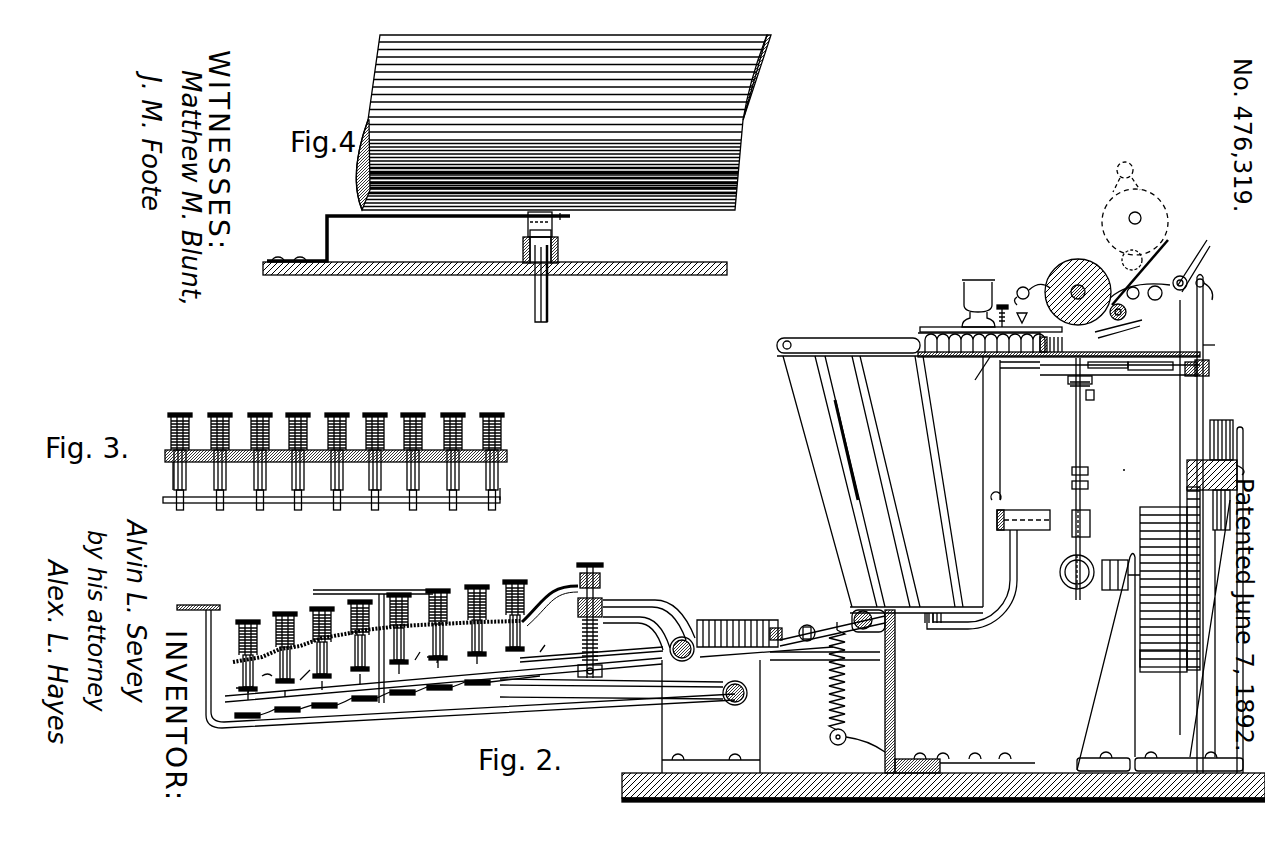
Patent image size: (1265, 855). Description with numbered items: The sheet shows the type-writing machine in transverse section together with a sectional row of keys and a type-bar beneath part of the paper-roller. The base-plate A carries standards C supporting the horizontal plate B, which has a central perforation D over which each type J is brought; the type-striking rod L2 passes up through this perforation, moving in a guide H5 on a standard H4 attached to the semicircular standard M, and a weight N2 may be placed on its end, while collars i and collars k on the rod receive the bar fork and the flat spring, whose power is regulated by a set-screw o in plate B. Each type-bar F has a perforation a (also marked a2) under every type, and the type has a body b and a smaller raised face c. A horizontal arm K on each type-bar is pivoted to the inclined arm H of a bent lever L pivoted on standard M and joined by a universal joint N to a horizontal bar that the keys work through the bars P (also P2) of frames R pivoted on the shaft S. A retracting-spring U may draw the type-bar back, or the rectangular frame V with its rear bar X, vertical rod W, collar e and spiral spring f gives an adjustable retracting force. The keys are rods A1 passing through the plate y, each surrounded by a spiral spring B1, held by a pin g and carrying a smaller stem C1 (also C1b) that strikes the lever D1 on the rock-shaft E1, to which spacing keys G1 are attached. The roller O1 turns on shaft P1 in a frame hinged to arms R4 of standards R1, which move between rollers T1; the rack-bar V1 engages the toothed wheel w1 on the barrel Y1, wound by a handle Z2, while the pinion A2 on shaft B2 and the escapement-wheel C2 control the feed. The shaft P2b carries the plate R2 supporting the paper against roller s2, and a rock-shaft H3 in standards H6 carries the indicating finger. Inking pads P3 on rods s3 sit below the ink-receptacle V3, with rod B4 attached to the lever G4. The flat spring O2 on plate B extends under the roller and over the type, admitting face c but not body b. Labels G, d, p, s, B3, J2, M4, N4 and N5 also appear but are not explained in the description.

In FIG. 2, the base-plate A is at (1046, 770).
In FIG. 4, the horizontal plate B is at (447, 266).
In FIG. 2, the standards C is at (1146, 611).
In FIG. 2, the perforation D is at (1074, 365).
In FIG. 4, the type-bars F is at (523, 248).
In FIG. 2, the type-bars F is at (920, 340).
In FIG. 2, the key guide bar G is at (382, 590).
In FIG. 2, the vertically-inclined arm H is at (888, 450).
In FIG. 4, the type J is at (560, 236).
In FIG. 2, the horizontal arm K is at (988, 337).
In FIG. 2, the bent levers L is at (832, 622).
In FIG. 2, the semicircular standard M is at (897, 688).
In FIG. 2, the universal joint N is at (803, 626).
In FIG. 3, the horizontal parallel bars P is at (279, 503).
In FIG. 2, the frame R is at (636, 633).
In FIG. 2, the shaft S is at (680, 657).
In FIG. 2, the retracting-spring U is at (857, 687).
In FIG. 2, the rectangular frame V is at (649, 609).
In FIG. 2, the vertical rod W is at (600, 594).
In FIG. 2, the rear bar X is at (765, 629).
In FIG. 4, the perforation a is at (558, 258).
In FIG. 4, the body of the type b is at (527, 224).
In FIG. 4, the raised face of the type c is at (567, 216).
In FIG. 2, the pawl d is at (1024, 286).
In FIG. 2, the collar e is at (603, 668).
In FIG. 2, the spiral spring f is at (595, 640).
In FIG. 2, the pin g is at (270, 666).
In FIG. 2, the collars i is at (1073, 476).
In FIG. 2, the collars k is at (1087, 388).
In FIG. 2, the set-screw o is at (784, 662).
In FIG. 2, the screw p is at (1012, 316).
In FIG. 3, the spring s is at (176, 465).
In FIG. 2, the plate y is at (550, 595).
In FIG. 3, the vertical rods A1 is at (336, 464).
In FIG. 2, the pinion A2 is at (478, 588).
In FIG. 3, the spiral spring B1 is at (337, 461).
In FIG. 2, the shaft B2 is at (376, 638).
In FIG. 2, the plate B B3 is at (1135, 356).
In FIG. 2, the rod B4 is at (1008, 430).
In FIG. 2, the stem C1 is at (341, 661).
In FIG. 2, the stem C1b is at (1129, 462).
In FIG. 3, the escapement-wheel C2 is at (500, 490).
In FIG. 2, the frame or lever D1 is at (527, 696).
In FIG. 2, the rock-shaft E1 is at (733, 698).
In FIG. 2, the keys G1 is at (222, 604).
In FIG. 2, the horizontal lever G4 is at (988, 555).
In FIG. 2, the rock-shaft H3 is at (1206, 282).
In FIG. 2, the standard H4 is at (1069, 570).
In FIG. 2, the guide H5 is at (1093, 516).
In FIG. 2, the standards H6 is at (1218, 345).
In FIG. 2, the brace J J2 is at (973, 376).
In FIG. 2, the type-striking rod L2 is at (1071, 417).
In FIG. 2, the bar M4 is at (1110, 388).
In FIG. 2, the weight N2 is at (1095, 462).
In FIG. 2, the bar N4 is at (1150, 388).
In FIG. 2, the nut N5 is at (1210, 370).
In FIG. 2, the roller O1 is at (1076, 270).
In FIG. 4, the flat spring O2 is at (519, 148).
In FIG. 2, the shaft P1 is at (1141, 216).
In FIG. 2, the horizontal parallel bars P2 is at (427, 651).
In FIG. 2, the shaft P2b is at (1186, 278).
In FIG. 2, the pads P3 is at (991, 316).
In FIG. 2, the vertical standards R1 is at (1203, 325).
In FIG. 2, the plate of metal R2 is at (1140, 272).
In FIG. 2, the forwardly-extending arms R4 is at (1194, 259).
In FIG. 2, the rollers T1 is at (1225, 425).
In FIG. 2, the rack-bar V1 is at (1186, 476).
In FIG. 2, the ink-receptacle V3 is at (980, 280).
In FIG. 2, the barrel Y1 is at (1140, 538).
In FIG. 2, the handle Z2 is at (1163, 672).
In FIG. 2, the perforation a2 is at (1059, 369).
In FIG. 2, the roller s2 is at (1129, 314).
In FIG. 2, the vertical rods s3 is at (1244, 466).
In FIG. 2, the toothed wheel w1 is at (1215, 532).